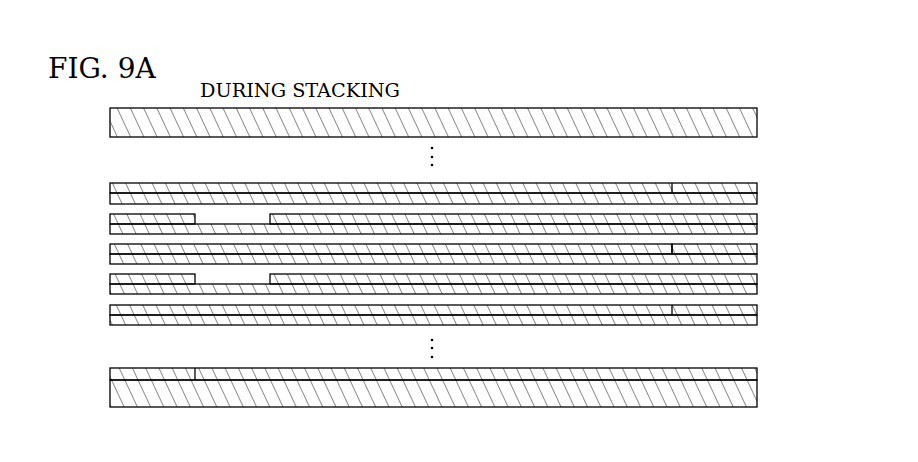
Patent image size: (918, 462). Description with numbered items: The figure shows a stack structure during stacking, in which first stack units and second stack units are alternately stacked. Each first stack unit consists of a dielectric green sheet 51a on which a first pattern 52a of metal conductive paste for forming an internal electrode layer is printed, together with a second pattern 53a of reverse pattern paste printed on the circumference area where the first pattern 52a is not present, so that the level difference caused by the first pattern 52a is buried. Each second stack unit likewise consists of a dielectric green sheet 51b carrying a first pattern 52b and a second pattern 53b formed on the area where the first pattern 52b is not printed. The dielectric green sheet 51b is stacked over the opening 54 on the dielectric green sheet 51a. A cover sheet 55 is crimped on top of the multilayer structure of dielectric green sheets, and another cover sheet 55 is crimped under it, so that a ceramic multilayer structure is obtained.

The cover sheet 55 is at (759, 122).
The opening 54 is at (225, 283).
The dielectric green sheet 51a is at (757, 290).
The dielectric green sheet 51b is at (110, 259).
The first pattern 52a is at (757, 277).
The first pattern 52b is at (110, 248).
The second pattern 53a is at (110, 284).
The second pattern 53b is at (757, 248).